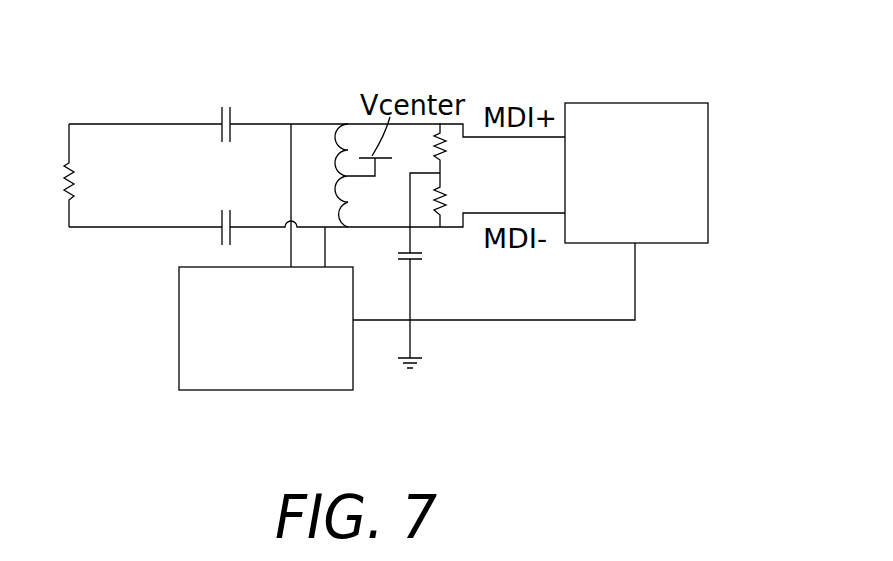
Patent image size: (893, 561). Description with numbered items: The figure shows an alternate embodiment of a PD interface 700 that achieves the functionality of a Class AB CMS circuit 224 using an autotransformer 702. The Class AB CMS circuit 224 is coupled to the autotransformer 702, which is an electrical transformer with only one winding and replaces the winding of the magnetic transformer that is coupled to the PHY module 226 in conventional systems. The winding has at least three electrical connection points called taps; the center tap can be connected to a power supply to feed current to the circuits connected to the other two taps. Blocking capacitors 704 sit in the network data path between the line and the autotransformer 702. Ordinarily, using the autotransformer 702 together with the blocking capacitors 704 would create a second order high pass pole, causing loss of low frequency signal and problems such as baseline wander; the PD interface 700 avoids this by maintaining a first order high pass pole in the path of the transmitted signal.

The PD interface 700 is at (92, 61).
The blocking capacitors 704 is at (220, 118).
The autotransformer 702 is at (335, 134).
The Class AB CMS circuit 224 is at (178, 323).
The PHY module 226 is at (712, 177).